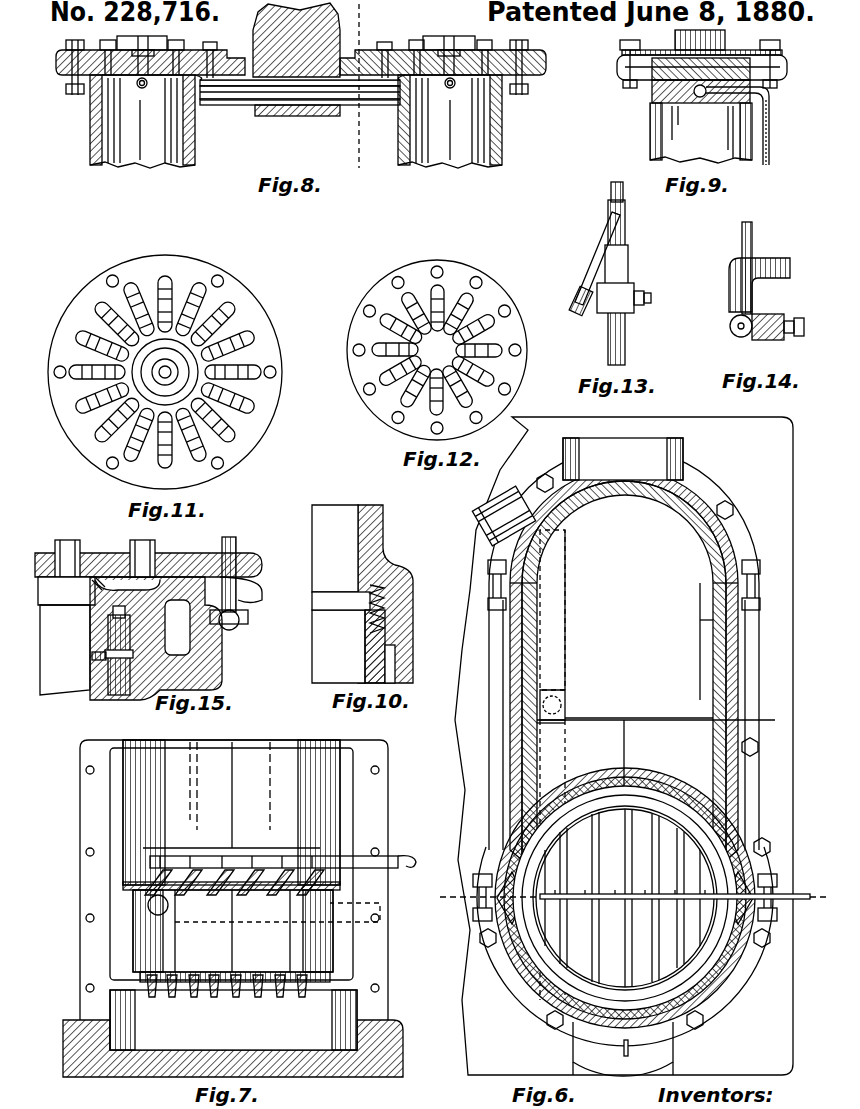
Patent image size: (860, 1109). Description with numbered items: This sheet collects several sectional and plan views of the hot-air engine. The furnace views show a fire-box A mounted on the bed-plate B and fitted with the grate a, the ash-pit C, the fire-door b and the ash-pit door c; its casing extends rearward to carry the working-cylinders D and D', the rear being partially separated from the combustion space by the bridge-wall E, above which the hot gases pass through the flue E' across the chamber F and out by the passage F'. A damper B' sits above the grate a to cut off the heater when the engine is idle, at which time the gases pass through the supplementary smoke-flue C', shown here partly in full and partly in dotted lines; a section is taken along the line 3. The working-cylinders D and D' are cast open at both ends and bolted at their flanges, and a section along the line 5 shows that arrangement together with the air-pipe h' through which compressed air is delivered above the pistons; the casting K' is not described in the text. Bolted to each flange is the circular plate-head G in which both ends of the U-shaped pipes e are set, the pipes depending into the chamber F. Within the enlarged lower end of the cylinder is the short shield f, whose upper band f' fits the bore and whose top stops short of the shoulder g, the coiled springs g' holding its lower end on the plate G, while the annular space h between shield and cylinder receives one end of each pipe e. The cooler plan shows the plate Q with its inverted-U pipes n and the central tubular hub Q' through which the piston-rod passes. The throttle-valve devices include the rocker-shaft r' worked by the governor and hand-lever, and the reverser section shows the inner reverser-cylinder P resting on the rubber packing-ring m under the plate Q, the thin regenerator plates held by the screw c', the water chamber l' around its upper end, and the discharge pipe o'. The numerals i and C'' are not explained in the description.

In FIG. 8, the casting K' is at (286, 40).
In FIG. 9, the pipe h' is at (750, 126).
In FIG. 8, the working-cylinder D is at (142, 121).
In FIG. 10, the working-cylinder D is at (385, 594).
In FIG. 8, the working-cylinder D' is at (450, 121).
In FIG. 9, the working-cylinder D' is at (701, 133).
In FIG. 8, the pin i is at (146, 40).
In FIG. 9, the pin i is at (726, 48).
In FIG. 8, the section line 5 is at (360, 90).
In FIG. 11, the plate Q is at (165, 372).
In FIG. 15, the plate Q is at (148, 567).
In FIG. 11, the tubular hub Q' is at (165, 372).
In FIG. 11, the pipes n is at (165, 372).
In FIG. 15, the pipes n is at (105, 558).
In FIG. 12, the plate-head G is at (437, 350).
In FIG. 12, the U-shaped pipes e is at (437, 351).
In FIG. 13, the rocker-shaft r' is at (611, 271).
In FIG. 14, the rocker-shaft r' is at (787, 315).
In FIG. 15, the reverser-cylinder P is at (66, 636).
In FIG. 15, the annular chamber l' is at (156, 638).
In FIG. 15, the rubber packing-ring m is at (100, 575).
In FIG. 15, the pipe o' is at (120, 609).
In FIG. 15, the screw c' is at (82, 662).
In FIG. 10, the shield f is at (338, 594).
In FIG. 10, the flange f' is at (385, 646).
In FIG. 10, the shoulder g is at (341, 598).
In FIG. 10, the coiled springs g' is at (390, 609).
In FIG. 10, the annular space h is at (396, 664).
In FIG. 7, the fire-box A is at (230, 880).
In FIG. 6, the fire-box A is at (625, 747).
In FIG. 7, the bed-plate B is at (233, 1048).
In FIG. 6, the bed-plate B is at (624, 746).
In FIG. 7, the damper B' is at (207, 846).
In FIG. 6, the damper B' is at (625, 898).
In FIG. 7, the ash-pit C is at (233, 1020).
In FIG. 6, the supplementary smoke-flue C' is at (508, 743).
In FIG. 7, the chamber C'' is at (158, 905).
In FIG. 6, the chamber C'' is at (557, 641).
In FIG. 7, the bridge-wall E is at (231, 856).
In FIG. 6, the bridge-wall E is at (635, 755).
In FIG. 7, the flue E' is at (280, 860).
In FIG. 7, the grate a is at (235, 982).
In FIG. 6, the chamber F is at (624, 664).
In FIG. 6, the passage F' is at (623, 459).
In FIG. 6, the section line 3 is at (636, 899).
In FIG. 6, the fire-door b is at (592, 1030).
In FIG. 6, the ash-pit door c is at (633, 1053).